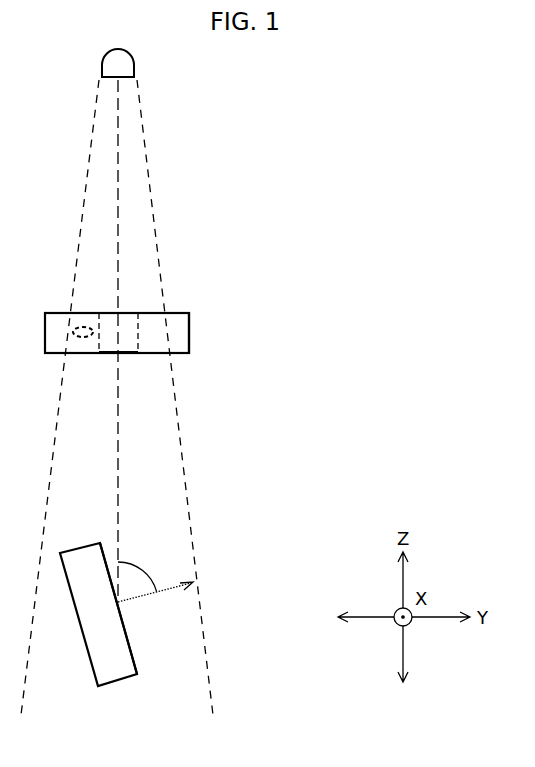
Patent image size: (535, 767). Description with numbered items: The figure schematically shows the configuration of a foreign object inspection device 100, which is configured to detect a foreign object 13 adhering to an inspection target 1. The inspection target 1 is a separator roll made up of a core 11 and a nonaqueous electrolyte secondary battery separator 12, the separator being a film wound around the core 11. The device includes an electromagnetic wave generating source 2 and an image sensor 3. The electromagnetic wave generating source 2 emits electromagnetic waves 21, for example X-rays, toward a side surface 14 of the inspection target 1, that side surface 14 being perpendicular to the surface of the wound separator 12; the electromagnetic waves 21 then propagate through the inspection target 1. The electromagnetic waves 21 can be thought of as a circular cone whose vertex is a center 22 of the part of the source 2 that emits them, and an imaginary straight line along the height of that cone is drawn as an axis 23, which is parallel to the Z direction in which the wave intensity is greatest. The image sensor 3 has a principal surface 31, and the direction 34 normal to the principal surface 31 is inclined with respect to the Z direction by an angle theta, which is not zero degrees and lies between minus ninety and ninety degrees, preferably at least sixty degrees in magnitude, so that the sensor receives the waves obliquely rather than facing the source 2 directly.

The foreign object inspection device 100 is at (297, 154).
The inspection target 1 is at (270, 294).
The electromagnetic wave generating source 2 is at (136, 69).
The image sensor 3 is at (121, 674).
The core 11 is at (139, 330).
The nonaqueous electrolyte secondary battery separator 12 is at (183, 338).
The foreign object 13 is at (82, 337).
The side surface 14 is at (60, 312).
The electromagnetic waves 21 is at (147, 236).
The center 22 is at (118, 79).
The axis 23 is at (118, 160).
The principal surface 31 is at (138, 661).
The direction normal to the principal surface 34 is at (164, 594).